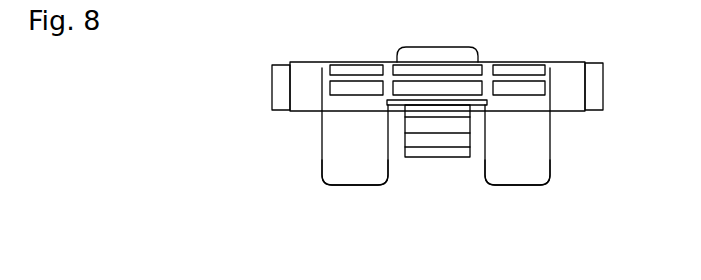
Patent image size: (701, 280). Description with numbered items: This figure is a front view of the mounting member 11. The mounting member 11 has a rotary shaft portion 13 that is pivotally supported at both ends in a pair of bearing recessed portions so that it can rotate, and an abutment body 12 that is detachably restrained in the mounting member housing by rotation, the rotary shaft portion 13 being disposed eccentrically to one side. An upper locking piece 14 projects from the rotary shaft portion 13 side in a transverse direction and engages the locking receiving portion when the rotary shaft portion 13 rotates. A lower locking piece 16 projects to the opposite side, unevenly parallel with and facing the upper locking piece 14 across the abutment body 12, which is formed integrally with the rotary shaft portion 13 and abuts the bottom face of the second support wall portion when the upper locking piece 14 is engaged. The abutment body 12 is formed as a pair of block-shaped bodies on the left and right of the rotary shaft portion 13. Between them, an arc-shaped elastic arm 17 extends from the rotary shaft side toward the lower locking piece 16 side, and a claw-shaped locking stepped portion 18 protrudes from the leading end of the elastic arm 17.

The mounting member 11 is at (541, 40).
The abutment body 12 is at (337, 121).
The rotary shaft portion 13 is at (603, 87).
The upper locking piece 14 is at (438, 43).
The lower locking piece 16 is at (437, 150).
The elastic arm 17 is at (420, 127).
The locking stepped portion 18 is at (348, 182).